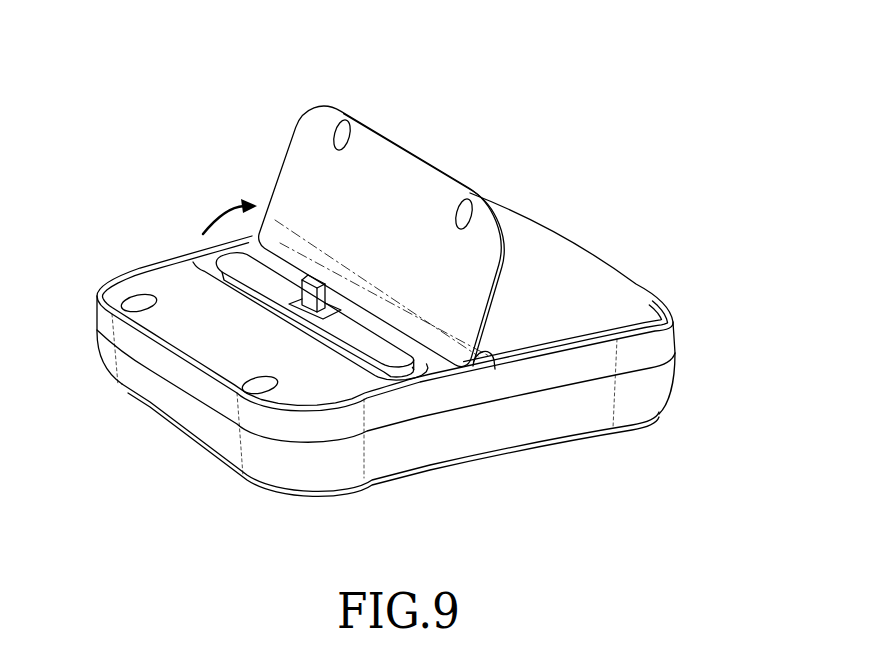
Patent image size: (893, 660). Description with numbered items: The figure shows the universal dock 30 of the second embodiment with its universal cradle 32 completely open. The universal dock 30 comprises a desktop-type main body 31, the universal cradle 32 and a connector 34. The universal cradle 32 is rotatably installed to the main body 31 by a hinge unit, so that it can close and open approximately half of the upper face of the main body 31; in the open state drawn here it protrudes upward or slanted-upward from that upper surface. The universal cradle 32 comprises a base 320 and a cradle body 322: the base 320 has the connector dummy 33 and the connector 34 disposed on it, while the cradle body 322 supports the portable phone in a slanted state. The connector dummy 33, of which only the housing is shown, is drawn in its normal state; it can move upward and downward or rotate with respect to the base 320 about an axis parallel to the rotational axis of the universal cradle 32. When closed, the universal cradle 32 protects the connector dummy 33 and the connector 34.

The universal dock 30 is at (109, 164).
The main body 31 is at (690, 385).
The universal cradle 32 is at (372, 206).
The connector dummy 33 is at (273, 269).
The connector 34 is at (316, 290).
The base 320 is at (408, 380).
The cradle body 322 is at (443, 174).